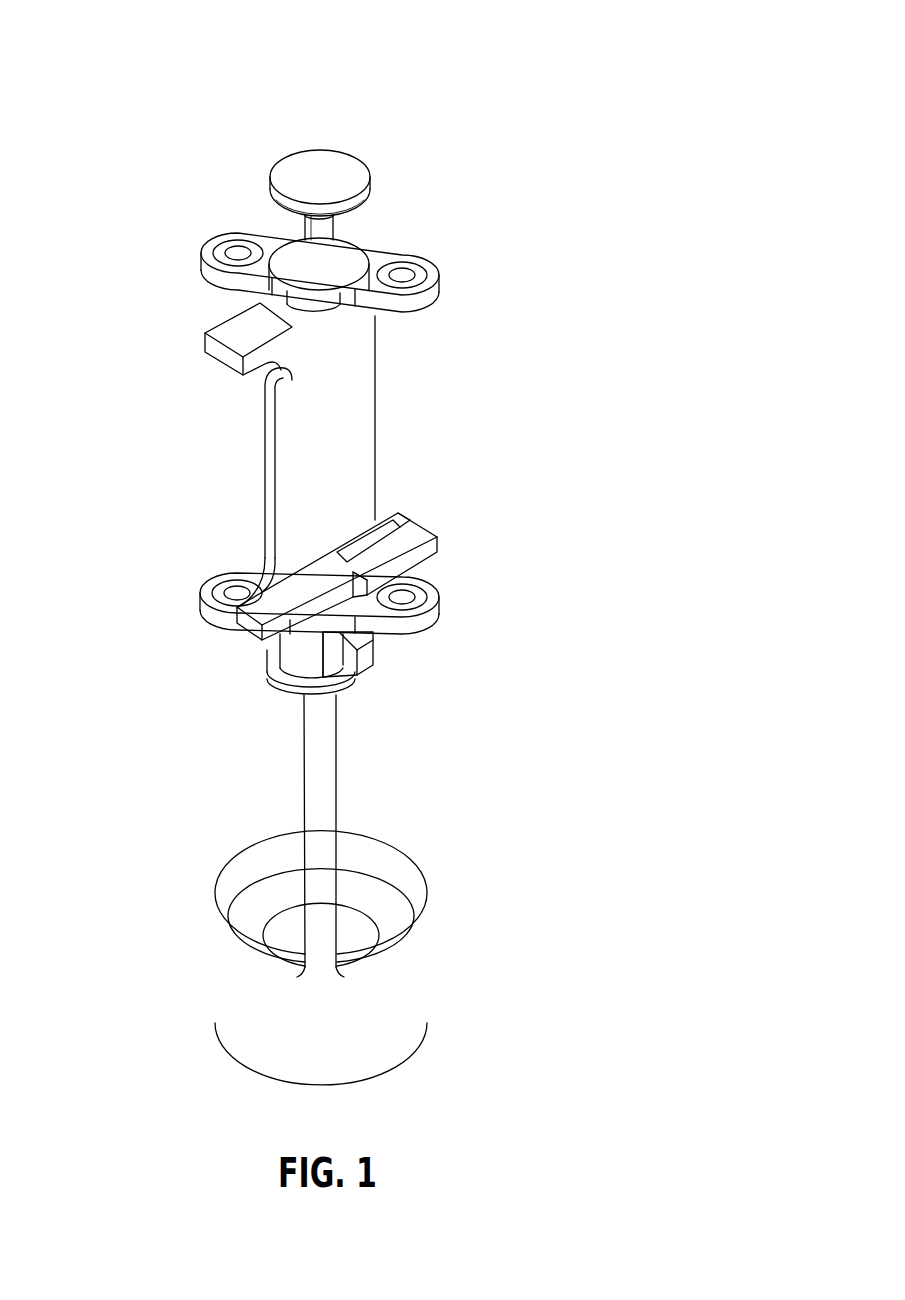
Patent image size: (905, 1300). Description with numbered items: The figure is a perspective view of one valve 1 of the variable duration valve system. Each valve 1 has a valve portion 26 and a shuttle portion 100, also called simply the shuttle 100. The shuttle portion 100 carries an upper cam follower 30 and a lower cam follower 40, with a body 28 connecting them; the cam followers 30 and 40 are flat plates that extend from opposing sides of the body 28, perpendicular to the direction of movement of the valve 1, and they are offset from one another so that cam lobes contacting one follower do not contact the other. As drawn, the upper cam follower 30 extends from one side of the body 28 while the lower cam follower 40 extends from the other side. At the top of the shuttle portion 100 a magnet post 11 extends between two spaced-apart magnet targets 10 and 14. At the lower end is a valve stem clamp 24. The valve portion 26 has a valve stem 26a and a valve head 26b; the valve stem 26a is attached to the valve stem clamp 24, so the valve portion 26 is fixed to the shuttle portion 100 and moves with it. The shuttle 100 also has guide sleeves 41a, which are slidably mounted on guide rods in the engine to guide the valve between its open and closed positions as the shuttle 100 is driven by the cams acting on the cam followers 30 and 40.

The valve 1 is at (160, 88).
The shuttle portion 100 is at (320, 348).
The magnet target 10 is at (360, 166).
The magnet post 11 is at (322, 240).
The magnet target 14 is at (350, 266).
The upper cam follower 30 is at (218, 362).
The body 28 is at (325, 438).
The lower cam follower 40 is at (402, 545).
The guide sleeve 41a is at (207, 590).
The valve stem clamp 24 is at (308, 647).
The valve portion 26 is at (515, 872).
The valve stem 26a is at (323, 756).
The valve head 26b is at (427, 1020).